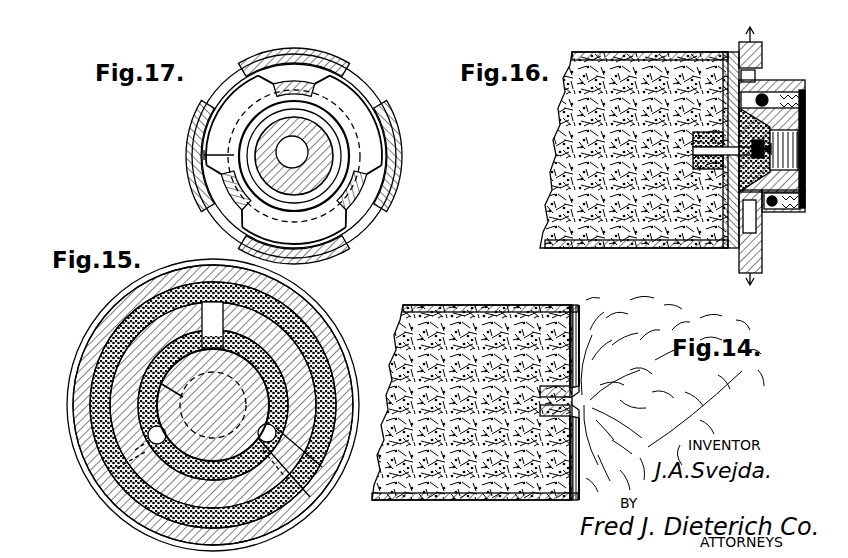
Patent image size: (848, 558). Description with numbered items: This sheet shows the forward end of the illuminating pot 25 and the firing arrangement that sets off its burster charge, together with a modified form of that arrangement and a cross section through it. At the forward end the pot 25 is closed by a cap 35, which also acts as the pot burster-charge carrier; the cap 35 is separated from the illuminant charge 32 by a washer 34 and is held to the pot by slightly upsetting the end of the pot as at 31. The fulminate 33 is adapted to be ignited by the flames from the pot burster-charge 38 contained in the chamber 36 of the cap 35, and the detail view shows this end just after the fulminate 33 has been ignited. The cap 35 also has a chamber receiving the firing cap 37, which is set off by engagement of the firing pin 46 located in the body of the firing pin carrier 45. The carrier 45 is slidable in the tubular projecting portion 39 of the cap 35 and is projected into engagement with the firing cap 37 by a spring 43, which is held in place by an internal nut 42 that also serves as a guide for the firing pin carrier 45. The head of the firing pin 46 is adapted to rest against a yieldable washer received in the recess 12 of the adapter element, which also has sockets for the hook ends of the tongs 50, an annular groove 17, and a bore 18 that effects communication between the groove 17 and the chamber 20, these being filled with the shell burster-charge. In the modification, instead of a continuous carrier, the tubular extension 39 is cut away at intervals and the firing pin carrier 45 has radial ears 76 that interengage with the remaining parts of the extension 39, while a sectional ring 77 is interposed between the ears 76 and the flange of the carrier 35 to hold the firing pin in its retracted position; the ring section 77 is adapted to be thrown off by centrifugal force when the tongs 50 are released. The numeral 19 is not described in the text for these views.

In FIG. 15, the recess 12 is at (90, 345).
In FIG. 16, the annular groove 17 is at (777, 80).
In FIG. 15, the annular groove 17 is at (280, 375).
In FIG. 15, the bore 18 is at (207, 300).
In FIG. 15, the outer sleeve 19 is at (283, 303).
In FIG. 15, the chamber 20 is at (267, 347).
In FIG. 16, the pot 25 is at (652, 53).
In FIG. 14, the pot 25 is at (506, 306).
In FIG. 17, the upset end of the pot 31 is at (372, 208).
In FIG. 14, the upset end of the pot 31 is at (582, 311).
In FIG. 16, the illuminant charge 32 is at (572, 139).
In FIG. 14, the illuminant charge 32 is at (523, 496).
In FIG. 16, the fulminate 33 is at (693, 150).
In FIG. 14, the fulminate 33 is at (540, 390).
In FIG. 16, the washer 34 is at (724, 203).
In FIG. 16, the cap 35 is at (724, 240).
In FIG. 16, the chamber 36 is at (724, 113).
In FIG. 16, the firing cap 37 is at (786, 146).
In FIG. 16, the pot burster-charge 38 is at (722, 131).
In FIG. 17, the tubular projecting portion 39 is at (308, 84).
In FIG. 16, the tubular projecting portion 39 is at (792, 86).
In FIG. 16, the internal nut 42 is at (800, 106).
In FIG. 17, the spring 43 is at (335, 133).
In FIG. 16, the spring 43 is at (790, 99).
In FIG. 17, the firing pin carrier 45 is at (330, 146).
In FIG. 16, the firing pin carrier 45 is at (805, 172).
In FIG. 17, the firing pin 46 is at (308, 153).
In FIG. 16, the firing pin 46 is at (772, 150).
In FIG. 17, the tongs 50 is at (305, 52).
In FIG. 17, the radial ears 76 is at (346, 92).
In FIG. 16, the radial ears 76 is at (746, 248).
In FIG. 17, the sectional ring 77 is at (192, 160).
In FIG. 16, the sectional ring 77 is at (762, 46).